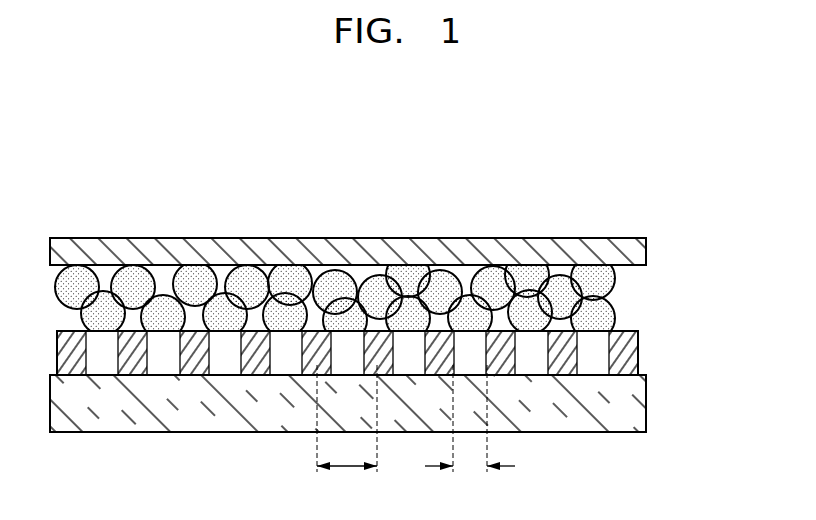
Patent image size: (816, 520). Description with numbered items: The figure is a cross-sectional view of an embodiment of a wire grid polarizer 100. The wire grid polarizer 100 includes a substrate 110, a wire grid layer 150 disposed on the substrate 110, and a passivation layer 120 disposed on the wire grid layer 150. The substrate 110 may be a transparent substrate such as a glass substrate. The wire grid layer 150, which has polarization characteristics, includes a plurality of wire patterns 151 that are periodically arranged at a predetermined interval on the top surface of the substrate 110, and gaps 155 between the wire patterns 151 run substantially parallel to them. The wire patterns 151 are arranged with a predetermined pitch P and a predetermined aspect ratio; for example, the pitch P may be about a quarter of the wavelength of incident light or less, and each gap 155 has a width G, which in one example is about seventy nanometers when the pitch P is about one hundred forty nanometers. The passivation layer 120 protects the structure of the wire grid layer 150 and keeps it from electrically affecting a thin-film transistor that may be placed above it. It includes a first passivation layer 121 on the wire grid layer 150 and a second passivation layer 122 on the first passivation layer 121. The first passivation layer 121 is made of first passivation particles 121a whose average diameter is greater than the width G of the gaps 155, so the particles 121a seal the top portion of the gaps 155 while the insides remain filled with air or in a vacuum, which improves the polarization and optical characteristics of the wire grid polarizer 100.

The wire grid polarizer 100 is at (638, 188).
The substrate 110 is at (637, 398).
The passivation layer 120 is at (725, 237).
The first passivation layer 121 is at (630, 298).
The first passivation particles 121a is at (445, 287).
The second passivation layer 122 is at (637, 247).
The wire grid layer 150 is at (648, 342).
The wire patterns 151 is at (503, 352).
The gaps 155 is at (601, 357).
The pitch P is at (347, 431).
The width of gap G is at (470, 431).